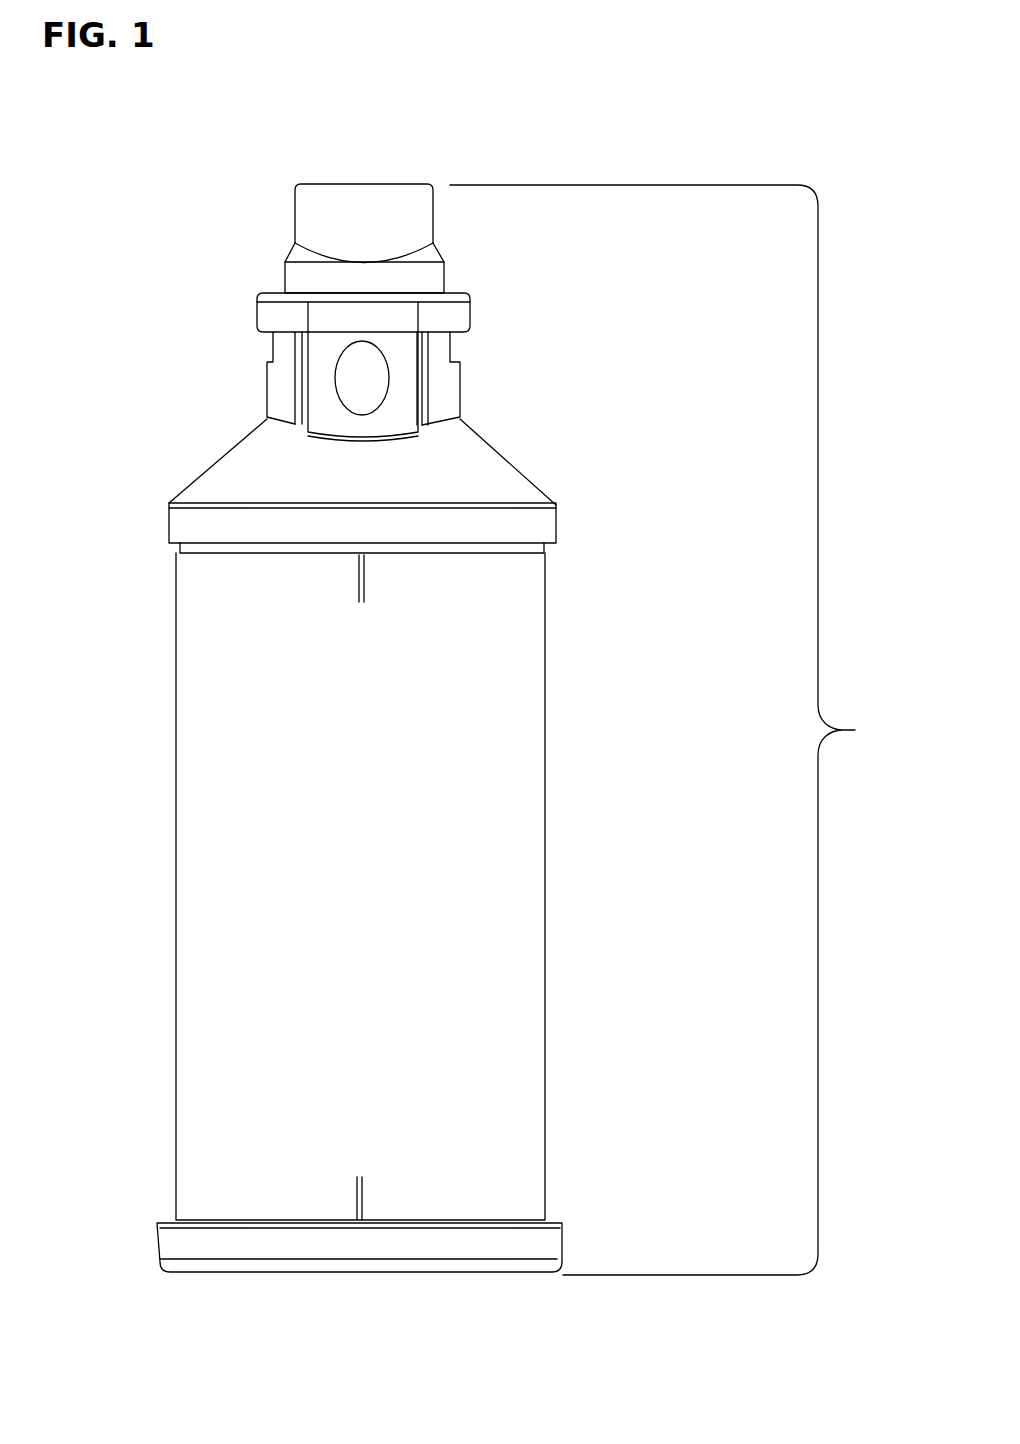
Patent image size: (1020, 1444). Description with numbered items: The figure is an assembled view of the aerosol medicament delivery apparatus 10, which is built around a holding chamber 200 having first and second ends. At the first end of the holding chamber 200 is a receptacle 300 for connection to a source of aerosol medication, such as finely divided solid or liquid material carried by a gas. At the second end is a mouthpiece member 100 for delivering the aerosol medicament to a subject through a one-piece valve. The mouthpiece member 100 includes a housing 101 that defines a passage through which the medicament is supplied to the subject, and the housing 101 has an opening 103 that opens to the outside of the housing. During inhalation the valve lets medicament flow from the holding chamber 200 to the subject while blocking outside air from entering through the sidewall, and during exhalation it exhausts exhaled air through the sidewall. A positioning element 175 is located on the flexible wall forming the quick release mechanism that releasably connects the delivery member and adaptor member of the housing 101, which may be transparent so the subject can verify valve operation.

The aerosol medicament delivery apparatus 10 is at (672, 730).
The mouthpiece member 100 is at (636, 185).
The housing 101 is at (263, 480).
The opening 103 is at (457, 348).
The positioning element 175 is at (365, 380).
The holding chamber 200 is at (572, 1231).
The receptacle 300 is at (636, 1333).